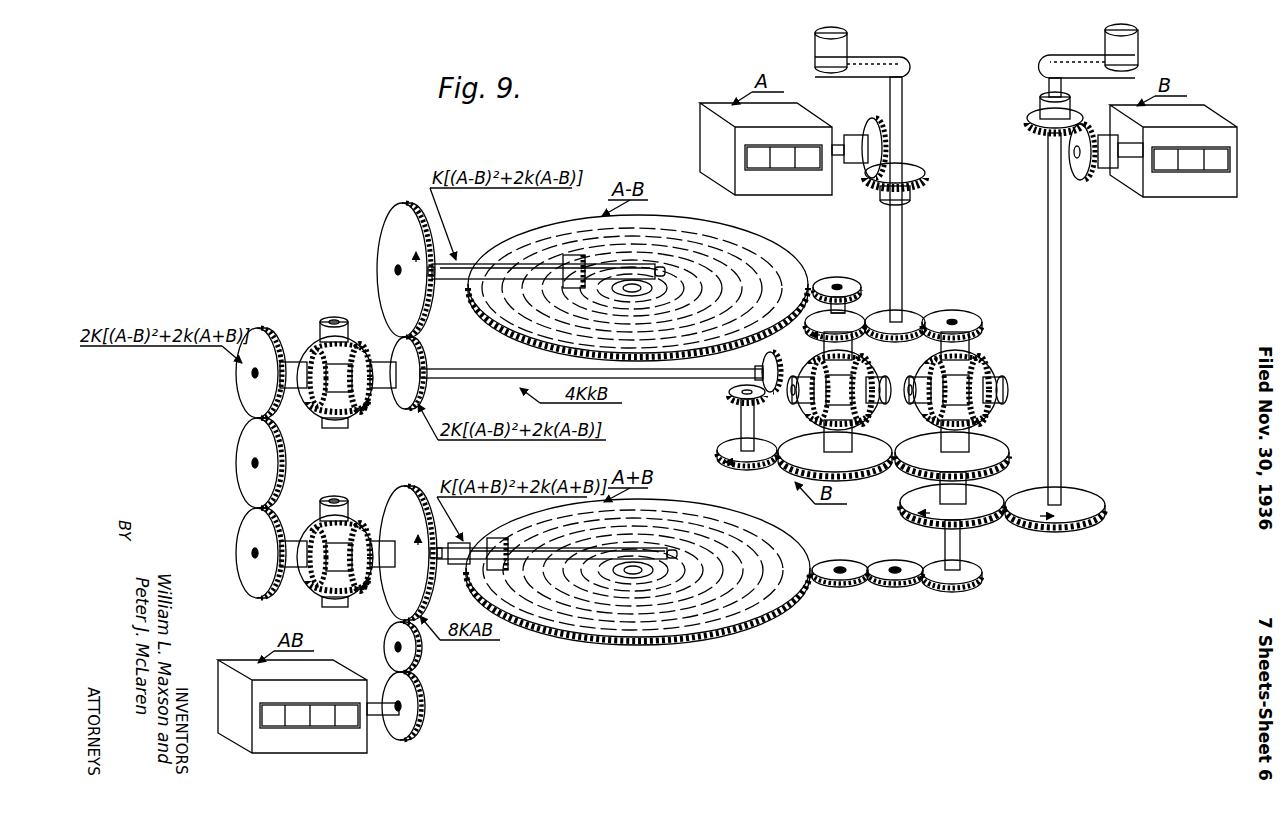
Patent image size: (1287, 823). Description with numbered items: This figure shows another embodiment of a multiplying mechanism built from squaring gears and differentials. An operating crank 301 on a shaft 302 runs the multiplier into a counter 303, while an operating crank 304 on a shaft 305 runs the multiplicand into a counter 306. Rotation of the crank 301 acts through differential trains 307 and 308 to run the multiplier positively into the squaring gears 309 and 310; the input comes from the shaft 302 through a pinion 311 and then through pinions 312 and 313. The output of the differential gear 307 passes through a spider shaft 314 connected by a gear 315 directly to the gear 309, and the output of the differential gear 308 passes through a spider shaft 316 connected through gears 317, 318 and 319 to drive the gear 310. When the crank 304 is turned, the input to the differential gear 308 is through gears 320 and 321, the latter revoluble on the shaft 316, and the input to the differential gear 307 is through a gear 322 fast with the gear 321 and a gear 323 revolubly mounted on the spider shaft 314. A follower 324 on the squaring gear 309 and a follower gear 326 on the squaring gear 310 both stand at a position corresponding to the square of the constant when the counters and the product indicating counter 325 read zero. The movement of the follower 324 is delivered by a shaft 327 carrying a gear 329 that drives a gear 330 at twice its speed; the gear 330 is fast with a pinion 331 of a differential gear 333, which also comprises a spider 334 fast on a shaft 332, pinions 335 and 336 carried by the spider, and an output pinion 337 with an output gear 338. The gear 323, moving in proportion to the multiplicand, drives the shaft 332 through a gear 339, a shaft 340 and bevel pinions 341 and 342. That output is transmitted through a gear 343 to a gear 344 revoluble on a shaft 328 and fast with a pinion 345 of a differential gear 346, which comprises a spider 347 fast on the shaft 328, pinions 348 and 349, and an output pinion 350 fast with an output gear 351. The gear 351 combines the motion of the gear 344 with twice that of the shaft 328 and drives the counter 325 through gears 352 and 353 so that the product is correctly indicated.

The operating crank 301 is at (864, 58).
The shaft 302 is at (903, 131).
The counter 303 is at (714, 138).
The operating crank 304 is at (1088, 58).
The shaft 305 is at (1060, 222).
The counter 306 is at (1232, 141).
The differential train 307 is at (882, 363).
The differential train 308 is at (997, 366).
The squaring gear 309 is at (763, 250).
The squaring gear 310 is at (738, 523).
The pinion 311 is at (906, 309).
The pinion 312 is at (815, 333).
The pinion 313 is at (972, 318).
The spider shaft 314 is at (849, 309).
The gear 315 is at (846, 278).
The spider shaft 316 is at (953, 314).
The gear 317 is at (981, 575).
The gear 318 is at (898, 561).
The gear 319 is at (837, 561).
The gear 320 is at (1083, 492).
The gear 321 is at (912, 501).
The gear 322 is at (995, 447).
The gear 323 is at (870, 443).
The follower 324 is at (568, 255).
The product indicating counter 325 is at (292, 746).
The follower gear 326 is at (507, 546).
The shaft 327 is at (438, 280).
The shaft 328 is at (461, 561).
The gear 329 is at (386, 234).
The gear 330 is at (404, 406).
The pinion 331 is at (376, 400).
The shaft 332 is at (521, 379).
The differential gear 333 is at (330, 318).
The spider 334 is at (335, 378).
The pinion 335 is at (352, 338).
The pinion 336 is at (322, 409).
The output pinion 337 is at (306, 351).
The output gear 338 is at (243, 398).
The gear 339 is at (728, 451).
The shaft 340 is at (756, 433).
The bevel pinion 341 is at (735, 399).
The bevel pinion 342 is at (763, 366).
The gear 343 is at (240, 471).
The gear 344 is at (243, 548).
The pinion 345 is at (307, 534).
The differential gear 346 is at (333, 498).
The spider 347 is at (346, 557).
The pinion 348 is at (353, 520).
The pinion 349 is at (320, 583).
The output pinion 350 is at (356, 583).
The output gear 351 is at (390, 606).
The gear 352 is at (387, 651).
The gear 353 is at (395, 731).